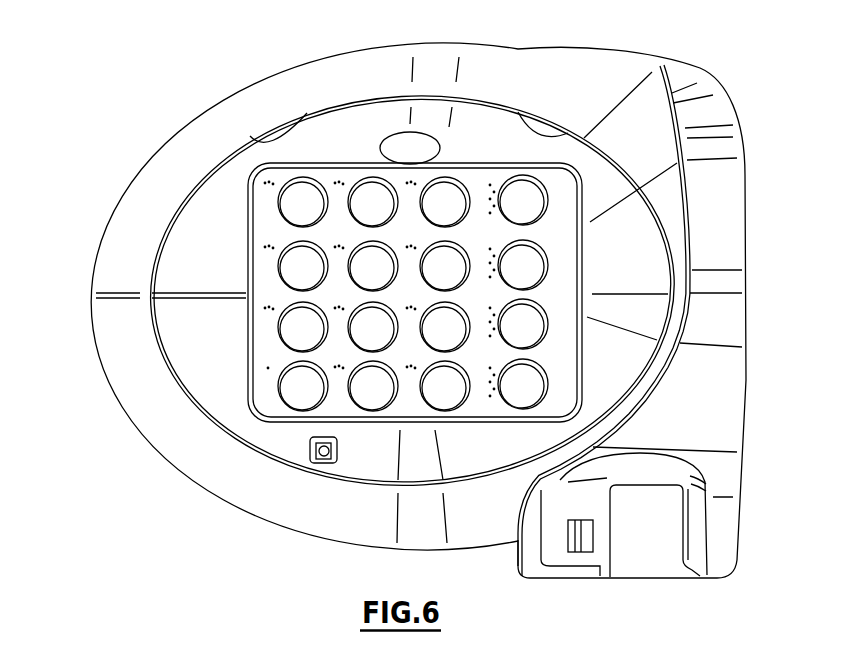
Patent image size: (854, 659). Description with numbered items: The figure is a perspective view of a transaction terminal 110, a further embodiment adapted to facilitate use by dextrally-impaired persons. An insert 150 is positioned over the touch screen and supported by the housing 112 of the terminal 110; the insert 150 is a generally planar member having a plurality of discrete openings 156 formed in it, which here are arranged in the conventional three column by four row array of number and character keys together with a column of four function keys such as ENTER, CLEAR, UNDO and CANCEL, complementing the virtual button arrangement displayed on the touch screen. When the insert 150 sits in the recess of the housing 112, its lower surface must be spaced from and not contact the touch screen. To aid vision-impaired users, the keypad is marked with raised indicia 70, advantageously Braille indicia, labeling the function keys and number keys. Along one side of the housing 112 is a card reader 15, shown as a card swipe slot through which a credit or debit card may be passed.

The transaction terminal 110 is at (126, 139).
The housing 112 is at (113, 418).
The insert 150 is at (584, 199).
The discrete openings 156 is at (523, 197).
The raised indicia 70 is at (264, 309).
The card reader 15 is at (633, 490).